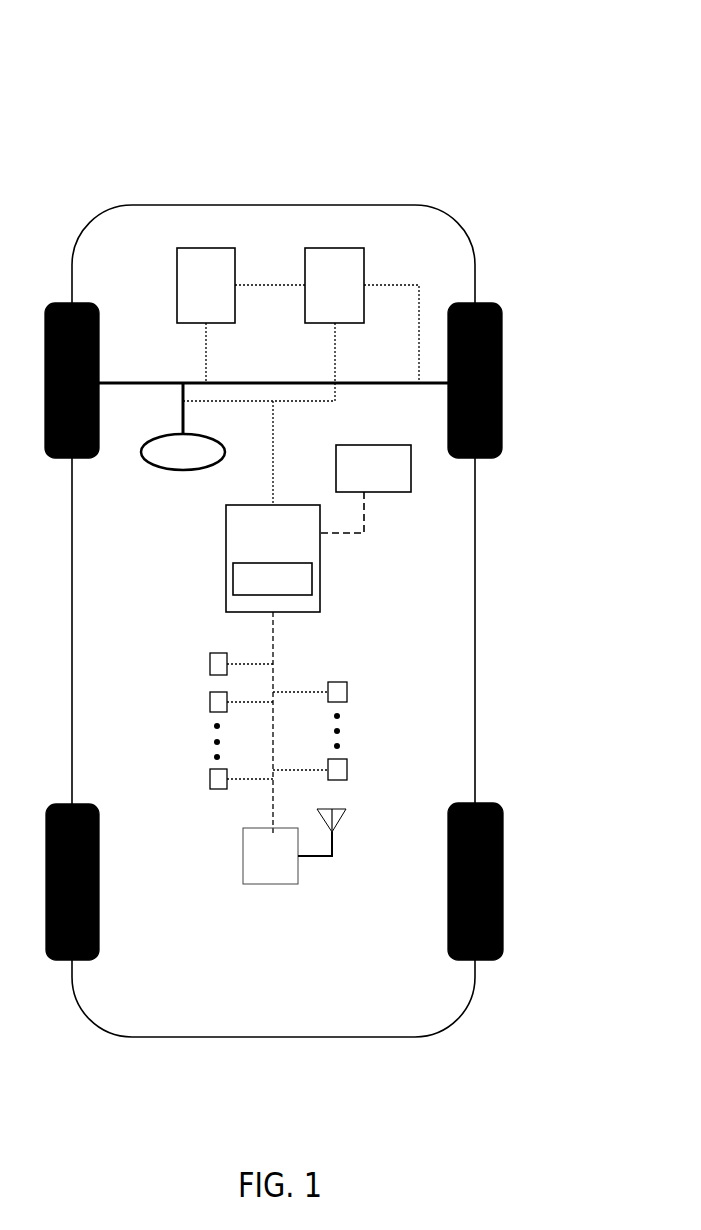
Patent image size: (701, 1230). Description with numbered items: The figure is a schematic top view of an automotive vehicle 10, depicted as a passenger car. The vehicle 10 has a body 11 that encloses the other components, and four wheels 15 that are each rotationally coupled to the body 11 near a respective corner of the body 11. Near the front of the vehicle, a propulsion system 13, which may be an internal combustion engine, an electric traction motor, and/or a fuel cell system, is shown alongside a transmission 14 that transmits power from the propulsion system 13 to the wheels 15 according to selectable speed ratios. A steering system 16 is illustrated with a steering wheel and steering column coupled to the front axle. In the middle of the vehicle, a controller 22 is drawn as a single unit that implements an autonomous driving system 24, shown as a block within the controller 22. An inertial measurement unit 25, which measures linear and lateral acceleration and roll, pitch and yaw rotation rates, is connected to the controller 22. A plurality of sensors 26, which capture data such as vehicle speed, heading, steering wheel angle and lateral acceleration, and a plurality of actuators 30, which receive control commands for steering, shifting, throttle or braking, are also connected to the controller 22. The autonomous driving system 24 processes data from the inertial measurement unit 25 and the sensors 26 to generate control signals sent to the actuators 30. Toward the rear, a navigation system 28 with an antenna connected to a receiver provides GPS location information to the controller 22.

The vehicle 10 is at (527, 125).
The body 11 is at (475, 630).
The propulsion system 13 is at (177, 290).
The transmission 14 is at (364, 258).
The wheels 15 is at (100, 335).
The steering system 16 is at (180, 472).
The controller 22 is at (320, 565).
The autonomous driving system 24 is at (296, 597).
The inertial measurement unit 25 is at (383, 493).
The sensors 26 is at (209, 653).
The navigation system 28 is at (265, 884).
The actuators 30 is at (348, 690).